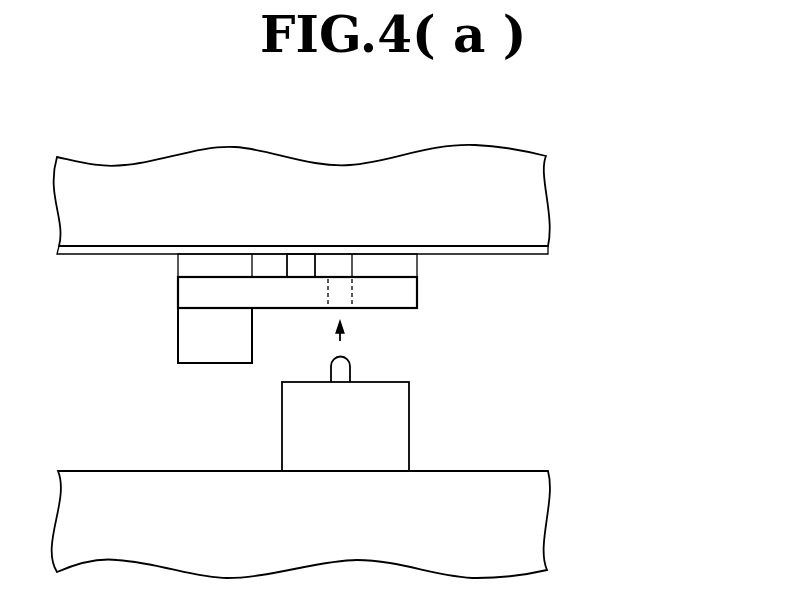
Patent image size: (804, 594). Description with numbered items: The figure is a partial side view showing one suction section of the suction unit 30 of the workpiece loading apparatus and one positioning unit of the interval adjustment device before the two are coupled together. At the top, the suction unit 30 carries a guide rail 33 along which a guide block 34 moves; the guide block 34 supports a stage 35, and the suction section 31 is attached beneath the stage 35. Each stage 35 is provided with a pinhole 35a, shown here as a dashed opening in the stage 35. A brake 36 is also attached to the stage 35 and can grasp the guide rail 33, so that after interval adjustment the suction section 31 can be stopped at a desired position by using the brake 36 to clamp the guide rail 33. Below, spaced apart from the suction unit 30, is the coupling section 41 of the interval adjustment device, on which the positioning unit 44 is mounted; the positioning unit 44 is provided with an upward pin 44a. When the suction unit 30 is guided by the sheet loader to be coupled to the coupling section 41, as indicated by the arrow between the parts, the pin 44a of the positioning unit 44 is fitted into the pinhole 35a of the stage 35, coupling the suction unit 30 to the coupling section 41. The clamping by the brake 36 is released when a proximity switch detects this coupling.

The suction unit 30 is at (543, 113).
The guide rail 33 is at (532, 254).
The guide block 34 is at (403, 262).
The brake 36 is at (303, 270).
The stage 35 is at (185, 302).
The pinhole 35a is at (342, 293).
The suction section 31 is at (187, 348).
The pin 44a is at (348, 363).
The positioning unit 44 is at (398, 420).
The coupling section 41 is at (557, 447).